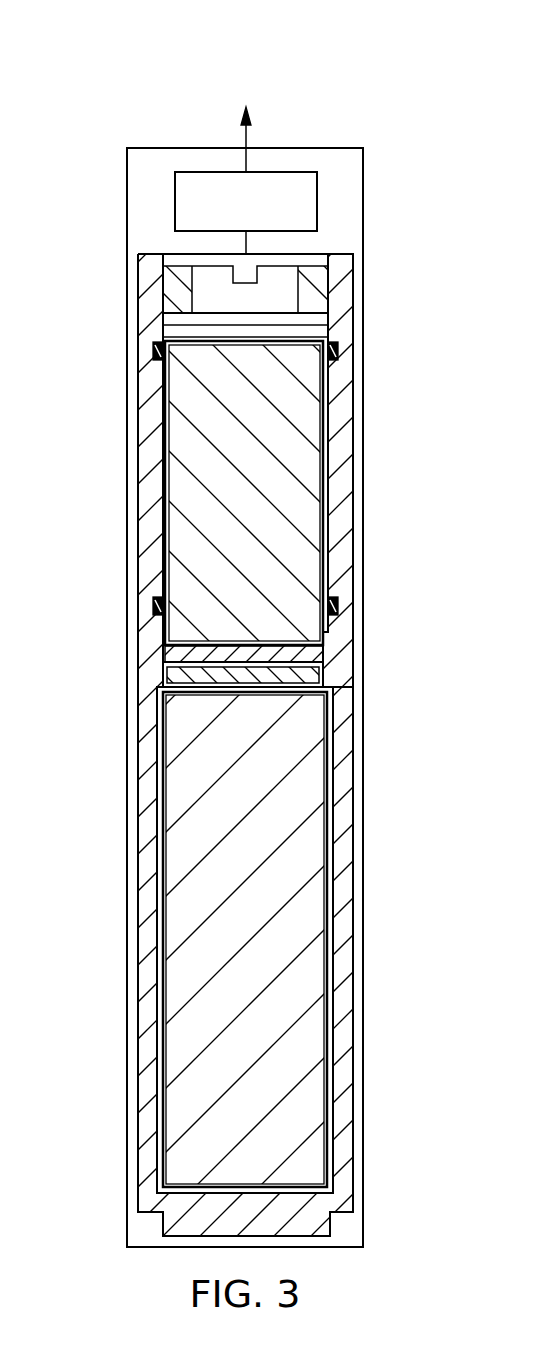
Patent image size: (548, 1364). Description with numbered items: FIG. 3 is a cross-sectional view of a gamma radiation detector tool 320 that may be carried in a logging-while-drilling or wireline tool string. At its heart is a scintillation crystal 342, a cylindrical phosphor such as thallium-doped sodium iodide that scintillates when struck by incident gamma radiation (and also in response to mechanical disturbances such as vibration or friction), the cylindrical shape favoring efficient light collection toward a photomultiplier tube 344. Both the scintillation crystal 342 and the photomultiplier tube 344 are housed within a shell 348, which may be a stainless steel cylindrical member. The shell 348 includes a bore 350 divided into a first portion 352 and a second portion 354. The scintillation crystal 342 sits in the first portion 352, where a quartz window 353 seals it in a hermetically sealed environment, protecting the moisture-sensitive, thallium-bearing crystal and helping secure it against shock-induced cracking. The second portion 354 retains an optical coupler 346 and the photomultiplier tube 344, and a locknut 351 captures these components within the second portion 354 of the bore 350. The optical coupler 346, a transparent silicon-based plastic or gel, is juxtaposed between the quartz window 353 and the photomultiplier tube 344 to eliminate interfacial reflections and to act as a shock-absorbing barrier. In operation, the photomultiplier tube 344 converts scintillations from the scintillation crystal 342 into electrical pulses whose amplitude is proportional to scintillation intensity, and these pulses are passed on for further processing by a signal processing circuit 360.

The gamma radiation detector tool 320 is at (153, 60).
The scintillation crystal 342 is at (224, 957).
The photomultiplier tube 344 is at (224, 489).
The optical coupler 346 is at (248, 658).
The shell 348 is at (128, 418).
The bore 350 is at (148, 988).
The locknut 351 is at (322, 287).
The first portion 352 is at (347, 937).
The quartz window 353 is at (232, 678).
The second portion 354 is at (347, 412).
The signal processing circuit 360 is at (224, 215).